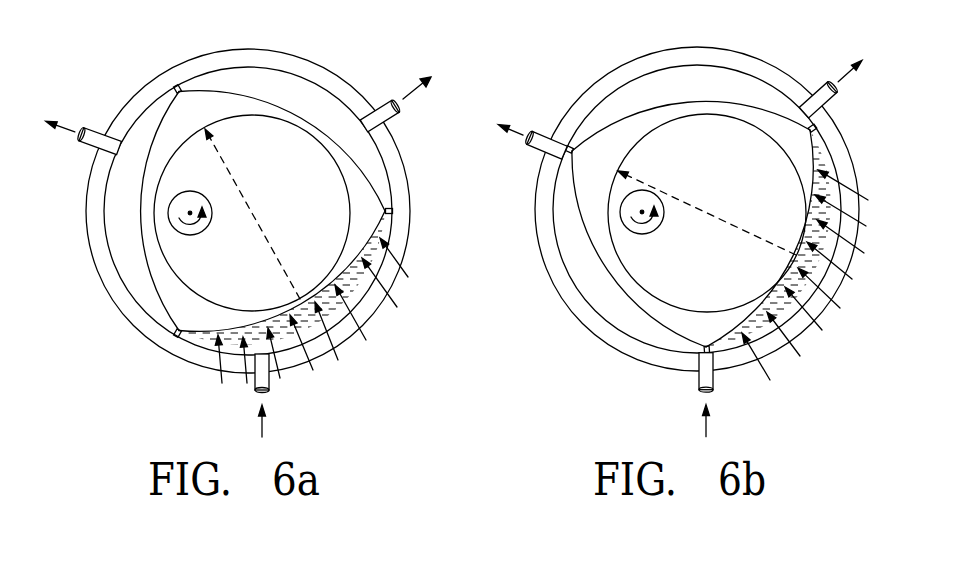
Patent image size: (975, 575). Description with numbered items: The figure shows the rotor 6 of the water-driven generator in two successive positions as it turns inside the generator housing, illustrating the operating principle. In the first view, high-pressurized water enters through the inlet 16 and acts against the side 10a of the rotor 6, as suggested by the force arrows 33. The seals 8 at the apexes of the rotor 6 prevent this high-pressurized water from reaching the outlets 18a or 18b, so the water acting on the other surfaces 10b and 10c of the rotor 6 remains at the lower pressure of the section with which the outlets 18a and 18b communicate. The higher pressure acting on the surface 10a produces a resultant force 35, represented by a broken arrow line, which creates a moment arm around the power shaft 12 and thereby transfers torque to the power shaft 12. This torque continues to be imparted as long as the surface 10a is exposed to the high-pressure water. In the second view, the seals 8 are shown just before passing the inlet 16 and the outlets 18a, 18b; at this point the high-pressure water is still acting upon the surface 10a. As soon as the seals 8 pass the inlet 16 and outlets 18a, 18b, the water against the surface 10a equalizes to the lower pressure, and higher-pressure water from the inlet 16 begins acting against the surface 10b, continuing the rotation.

In FIG. 6a, the rotor 6 is at (263, 168).
In FIG. 6b, the rotor 6 is at (692, 176).
In FIG. 6a, the seals 8 is at (388, 206).
In FIG. 6b, the seals 8 is at (691, 238).
In FIG. 6a, the side of rotor 10a is at (337, 268).
In FIG. 6b, the side of rotor 10a is at (811, 195).
In FIG. 6a, the surface of rotor 10b is at (158, 287).
In FIG. 6b, the surface of rotor 10b is at (620, 278).
In FIG. 6a, the surface of rotor 10c is at (306, 132).
In FIG. 6b, the surface of rotor 10c is at (691, 126).
In FIG. 6a, the power shaft 12 is at (201, 233).
In FIG. 6b, the power shaft 12 is at (653, 232).
In FIG. 6a, the inlet 16 is at (272, 382).
In FIG. 6b, the inlet 16 is at (714, 382).
In FIG. 6a, the outlet 18a is at (379, 101).
In FIG. 6b, the outlet 18a is at (812, 86).
In FIG. 6a, the outlet 18b is at (93, 128).
In FIG. 6b, the outlet 18b is at (531, 138).
In FIG. 6a, the force arrows 33 is at (324, 312).
In FIG. 6b, the force arrows 33 is at (818, 275).
In FIG. 6a, the resultant force 35 is at (250, 187).
In FIG. 6b, the resultant force 35 is at (683, 197).